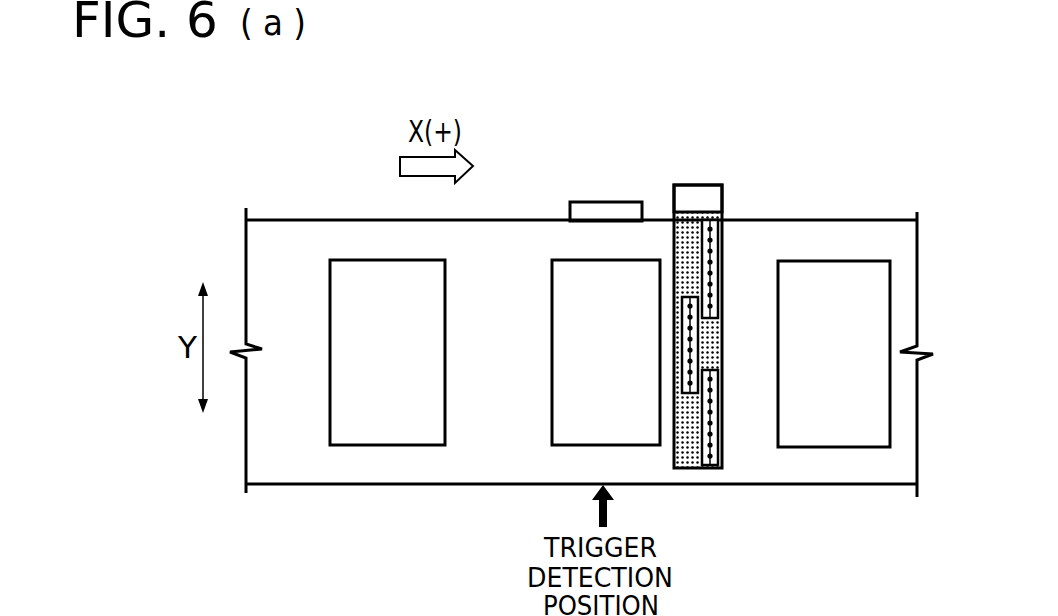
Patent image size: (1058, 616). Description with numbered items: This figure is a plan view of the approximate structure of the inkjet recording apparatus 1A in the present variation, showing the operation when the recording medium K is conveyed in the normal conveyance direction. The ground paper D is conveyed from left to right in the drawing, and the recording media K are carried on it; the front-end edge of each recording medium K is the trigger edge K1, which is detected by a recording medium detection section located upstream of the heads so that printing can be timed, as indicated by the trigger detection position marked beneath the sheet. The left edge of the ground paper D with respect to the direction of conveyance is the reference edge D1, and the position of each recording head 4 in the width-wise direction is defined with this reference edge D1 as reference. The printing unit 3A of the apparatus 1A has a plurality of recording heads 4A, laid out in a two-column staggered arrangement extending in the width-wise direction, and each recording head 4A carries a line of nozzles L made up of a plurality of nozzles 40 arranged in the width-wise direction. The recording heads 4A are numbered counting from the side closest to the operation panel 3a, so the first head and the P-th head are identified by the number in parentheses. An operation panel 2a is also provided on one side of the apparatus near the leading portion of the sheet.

The inkjet recording apparatus 1A is at (328, 114).
The printing unit 3A is at (628, 118).
The operation panel 2a is at (586, 201).
The operation panel 3a is at (700, 186).
The nozzles 40 is at (727, 218).
The recording head 4A is at (732, 238).
The recording head 4 is at (725, 298).
The reference edge D1 is at (502, 220).
The edge (trigger) K1 is at (661, 305).
The ground paper D is at (283, 475).
The recording medium K is at (373, 447).
The line of nozzles L is at (722, 402).